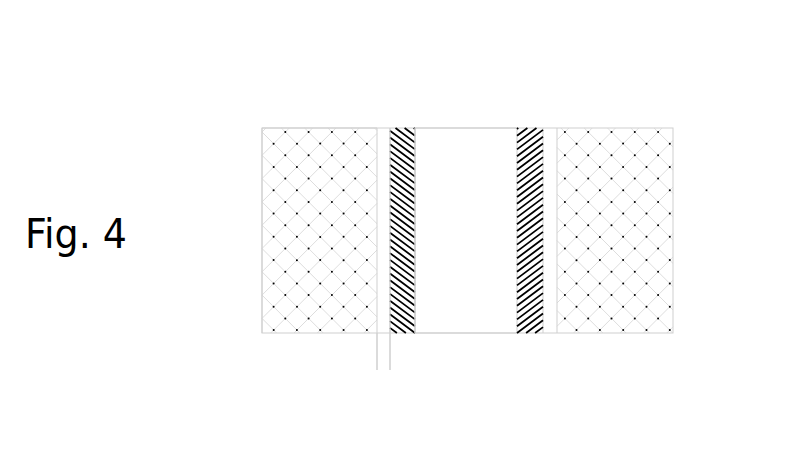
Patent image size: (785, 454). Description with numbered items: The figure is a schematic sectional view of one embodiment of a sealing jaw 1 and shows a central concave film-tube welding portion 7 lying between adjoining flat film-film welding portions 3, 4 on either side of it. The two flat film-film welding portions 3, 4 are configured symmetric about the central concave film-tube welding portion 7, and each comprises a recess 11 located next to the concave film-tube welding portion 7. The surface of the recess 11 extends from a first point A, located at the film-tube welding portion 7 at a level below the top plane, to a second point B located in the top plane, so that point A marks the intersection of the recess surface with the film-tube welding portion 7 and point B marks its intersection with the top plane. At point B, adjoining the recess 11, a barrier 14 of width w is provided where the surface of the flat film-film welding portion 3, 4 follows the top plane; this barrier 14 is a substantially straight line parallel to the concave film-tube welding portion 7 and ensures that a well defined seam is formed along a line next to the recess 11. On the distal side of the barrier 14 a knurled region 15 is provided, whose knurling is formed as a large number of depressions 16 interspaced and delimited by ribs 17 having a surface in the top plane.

The sealing jaw 1 is at (421, 210).
The flat film-film welding portion 3 is at (673, 58).
The flat film-film welding portion 4 is at (302, 188).
The concave film-tube welding portion 7 is at (518, 58).
The recess 11 is at (396, 221).
The barrier 14 is at (383, 143).
The knurled region 15 is at (335, 232).
The depressions 16 is at (285, 190).
The ribs 17 is at (279, 195).
The first point A is at (413, 333).
The second point B is at (390, 333).
The width of the barrier w is at (400, 363).